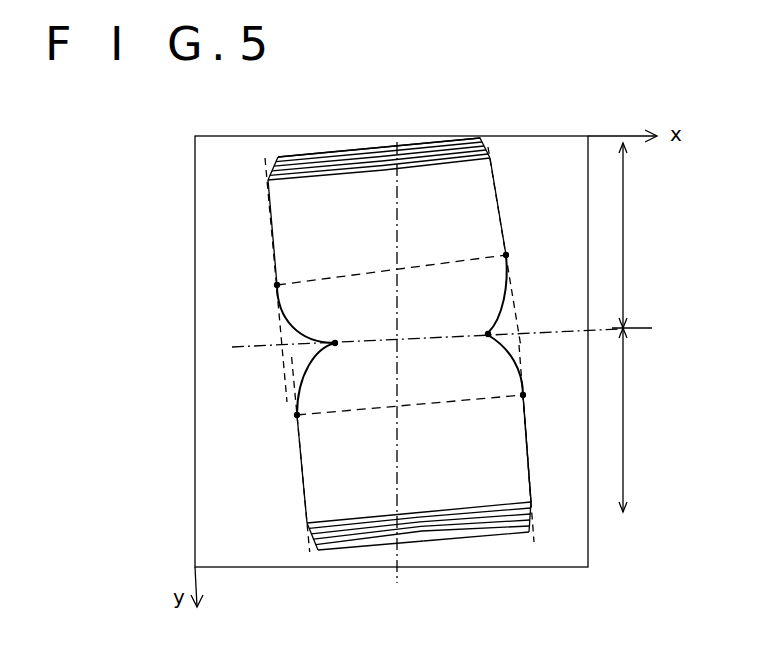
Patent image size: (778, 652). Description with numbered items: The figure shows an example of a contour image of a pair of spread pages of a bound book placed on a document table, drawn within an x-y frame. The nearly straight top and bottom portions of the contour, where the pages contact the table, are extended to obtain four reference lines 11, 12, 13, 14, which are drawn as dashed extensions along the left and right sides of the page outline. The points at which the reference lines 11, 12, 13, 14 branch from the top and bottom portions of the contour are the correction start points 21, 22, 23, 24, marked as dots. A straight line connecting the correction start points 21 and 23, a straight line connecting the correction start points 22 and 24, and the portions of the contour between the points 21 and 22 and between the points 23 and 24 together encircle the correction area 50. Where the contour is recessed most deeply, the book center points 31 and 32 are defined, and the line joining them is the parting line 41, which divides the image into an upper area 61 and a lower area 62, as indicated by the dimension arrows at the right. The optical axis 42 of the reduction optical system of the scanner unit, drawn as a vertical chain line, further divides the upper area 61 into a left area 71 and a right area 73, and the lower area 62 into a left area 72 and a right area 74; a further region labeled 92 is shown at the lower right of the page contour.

The reference line 11 is at (279, 313).
The reference line 12 is at (292, 388).
The reference line 13 is at (515, 282).
The reference line 14 is at (520, 363).
The correction start point 21 is at (277, 287).
The correction start point 22 is at (297, 415).
The correction start point 23 is at (506, 255).
The correction start point 24 is at (523, 395).
The book center point 31 is at (332, 344).
The book center point 32 is at (510, 332).
The parting line 41 is at (260, 347).
The optical axis 42 is at (397, 376).
The correction area 50 is at (327, 400).
The upper area 61 is at (633, 235).
The lower area 62 is at (640, 420).
The left area 71 is at (305, 200).
The left area 72 is at (340, 503).
The right area 73 is at (458, 170).
The right area 74 is at (498, 441).
The lower electrode layer 92 is at (467, 492).